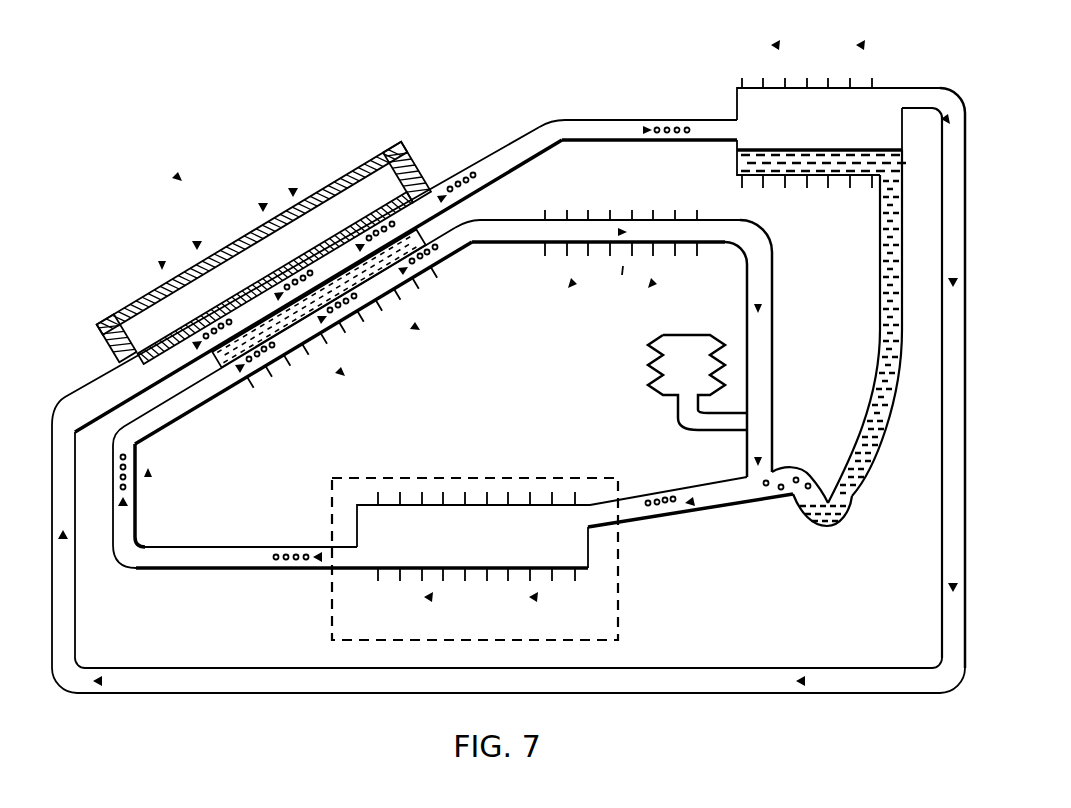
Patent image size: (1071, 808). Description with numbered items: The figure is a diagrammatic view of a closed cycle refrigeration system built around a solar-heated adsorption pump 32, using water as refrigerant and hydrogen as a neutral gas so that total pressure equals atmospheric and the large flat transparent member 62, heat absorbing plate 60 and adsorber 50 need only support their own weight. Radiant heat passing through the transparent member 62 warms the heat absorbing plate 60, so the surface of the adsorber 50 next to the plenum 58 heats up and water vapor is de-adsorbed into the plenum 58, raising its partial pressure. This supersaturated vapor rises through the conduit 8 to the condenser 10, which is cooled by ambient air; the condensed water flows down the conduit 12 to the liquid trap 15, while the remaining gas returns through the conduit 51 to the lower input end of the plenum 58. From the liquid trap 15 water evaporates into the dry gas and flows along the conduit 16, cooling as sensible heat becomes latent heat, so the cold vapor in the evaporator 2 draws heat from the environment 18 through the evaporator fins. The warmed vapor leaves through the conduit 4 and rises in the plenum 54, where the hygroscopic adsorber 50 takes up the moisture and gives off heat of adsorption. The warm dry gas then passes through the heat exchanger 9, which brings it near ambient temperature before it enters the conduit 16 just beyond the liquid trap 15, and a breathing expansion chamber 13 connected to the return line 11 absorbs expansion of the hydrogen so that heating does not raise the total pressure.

The evaporator 2 is at (590, 568).
The conduit 4 is at (220, 545).
The conduit 8 is at (628, 120).
The heat exchanger 9 is at (622, 220).
The condenser 10 is at (737, 95).
The return conduit 11 is at (773, 268).
The conduit 12 is at (880, 290).
The breathing expansion chamber 13 is at (652, 345).
The liquid trap 15 is at (831, 530).
The conduit 16 is at (677, 487).
The environment 18 is at (586, 478).
The pump 32 is at (264, 249).
The adsorber 50 is at (432, 228).
The conduit 51 is at (942, 268).
The plenum 54 is at (213, 384).
The plenum 58 is at (198, 336).
The heat absorbing plate 60 is at (356, 222).
The transparent member 62 is at (358, 164).